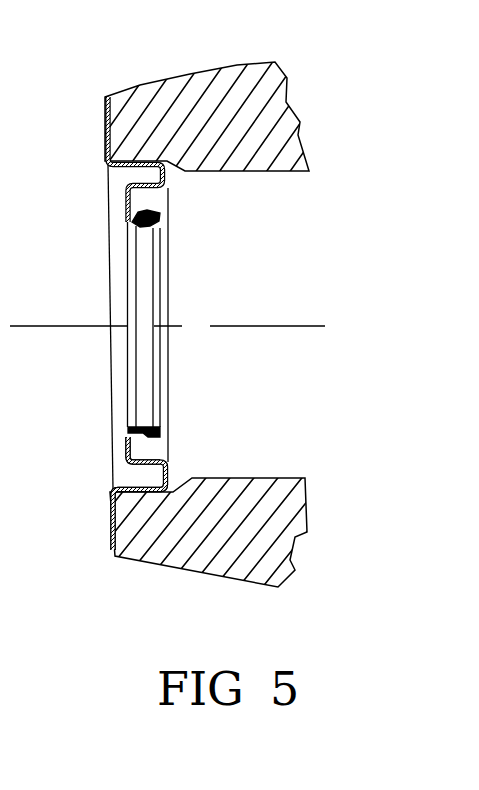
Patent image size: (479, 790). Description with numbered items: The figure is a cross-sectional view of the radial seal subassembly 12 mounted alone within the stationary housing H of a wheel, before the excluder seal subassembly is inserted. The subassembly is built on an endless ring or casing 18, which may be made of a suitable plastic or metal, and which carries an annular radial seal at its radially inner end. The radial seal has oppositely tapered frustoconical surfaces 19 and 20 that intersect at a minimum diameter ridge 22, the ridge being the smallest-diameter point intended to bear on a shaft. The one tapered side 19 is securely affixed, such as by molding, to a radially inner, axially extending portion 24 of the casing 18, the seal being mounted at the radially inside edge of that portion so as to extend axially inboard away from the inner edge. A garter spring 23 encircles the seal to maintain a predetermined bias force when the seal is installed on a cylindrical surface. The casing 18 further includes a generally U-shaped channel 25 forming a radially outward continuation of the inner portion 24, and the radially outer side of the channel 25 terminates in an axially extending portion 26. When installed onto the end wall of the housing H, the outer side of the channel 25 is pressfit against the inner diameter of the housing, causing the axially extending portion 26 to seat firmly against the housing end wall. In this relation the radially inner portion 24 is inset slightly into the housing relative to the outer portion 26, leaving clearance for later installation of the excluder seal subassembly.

The radial seal subassembly 12 is at (167, 174).
The casing 18 is at (174, 468).
The tapered surface 19 is at (147, 428).
The tapered surface 20 is at (157, 430).
The minimum diameter ridge 22 is at (153, 427).
The garter spring 23 is at (148, 217).
The radially inner, axially extending portion 24 is at (130, 439).
The U-shaped channel 25 is at (147, 480).
The axially extending portion 26 is at (110, 531).
The housing H is at (190, 567).